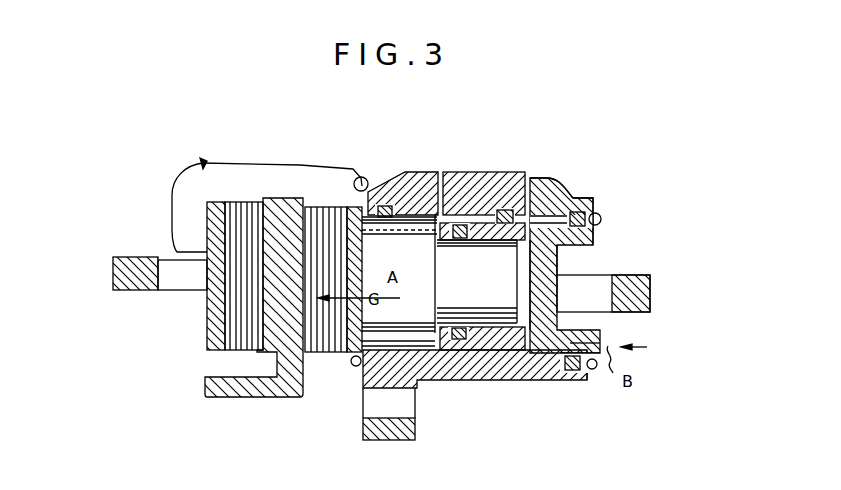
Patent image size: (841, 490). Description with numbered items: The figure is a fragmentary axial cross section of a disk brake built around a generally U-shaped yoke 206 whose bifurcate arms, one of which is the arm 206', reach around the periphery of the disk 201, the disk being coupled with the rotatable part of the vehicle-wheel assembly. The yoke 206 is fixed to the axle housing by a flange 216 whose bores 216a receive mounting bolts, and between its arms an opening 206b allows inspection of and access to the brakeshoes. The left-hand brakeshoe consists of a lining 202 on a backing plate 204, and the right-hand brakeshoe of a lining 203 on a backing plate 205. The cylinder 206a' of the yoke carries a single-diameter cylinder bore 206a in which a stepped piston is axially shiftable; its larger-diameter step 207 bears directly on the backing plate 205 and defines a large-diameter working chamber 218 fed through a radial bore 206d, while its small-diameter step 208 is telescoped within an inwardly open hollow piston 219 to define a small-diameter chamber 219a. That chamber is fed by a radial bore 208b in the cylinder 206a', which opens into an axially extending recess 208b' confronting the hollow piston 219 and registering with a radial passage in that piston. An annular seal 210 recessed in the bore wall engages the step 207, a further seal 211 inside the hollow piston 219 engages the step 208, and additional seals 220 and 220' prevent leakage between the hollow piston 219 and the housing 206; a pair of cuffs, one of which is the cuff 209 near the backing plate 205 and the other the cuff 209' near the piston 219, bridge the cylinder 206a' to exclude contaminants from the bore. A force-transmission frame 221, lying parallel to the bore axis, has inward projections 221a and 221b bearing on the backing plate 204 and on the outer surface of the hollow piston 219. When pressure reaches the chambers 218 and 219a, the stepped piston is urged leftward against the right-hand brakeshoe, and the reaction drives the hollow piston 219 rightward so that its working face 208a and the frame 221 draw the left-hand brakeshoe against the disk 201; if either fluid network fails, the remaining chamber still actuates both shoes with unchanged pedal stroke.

The disk 201 is at (279, 213).
The brakeshoe lining 202 is at (236, 206).
The brakeshoe lining 203 is at (323, 210).
The backing plate 204 is at (212, 335).
The backing plate 205 is at (351, 328).
The yoke 206 is at (270, 182).
The bifurcate arm 206' is at (331, 149).
The cylinder bore 206a is at (446, 405).
The cylinder 206a' is at (577, 384).
The opening 206b is at (385, 190).
The radial bore 206d is at (416, 233).
The larger-diameter step 207 is at (418, 238).
The small-diameter step 208 is at (490, 315).
The working face 208a is at (560, 266).
The radial bore 208b is at (553, 161).
The axially extending recess 208b' is at (607, 206).
The seal ring 209 is at (333, 391).
The cuffs 209' is at (619, 220).
The annular seal 210 is at (404, 236).
The seal 211 is at (462, 222).
The flange 216 is at (397, 434).
The bores 216a is at (416, 418).
The large-diameter working chamber 218 is at (440, 348).
The hollow piston 219 is at (600, 332).
The small-diameter chamber 219a is at (527, 318).
The seal 220 is at (546, 383).
The seal 220' is at (617, 389).
The frame 221 is at (111, 290).
The inward projection 221a is at (603, 303).
The inward projection 221b is at (182, 284).